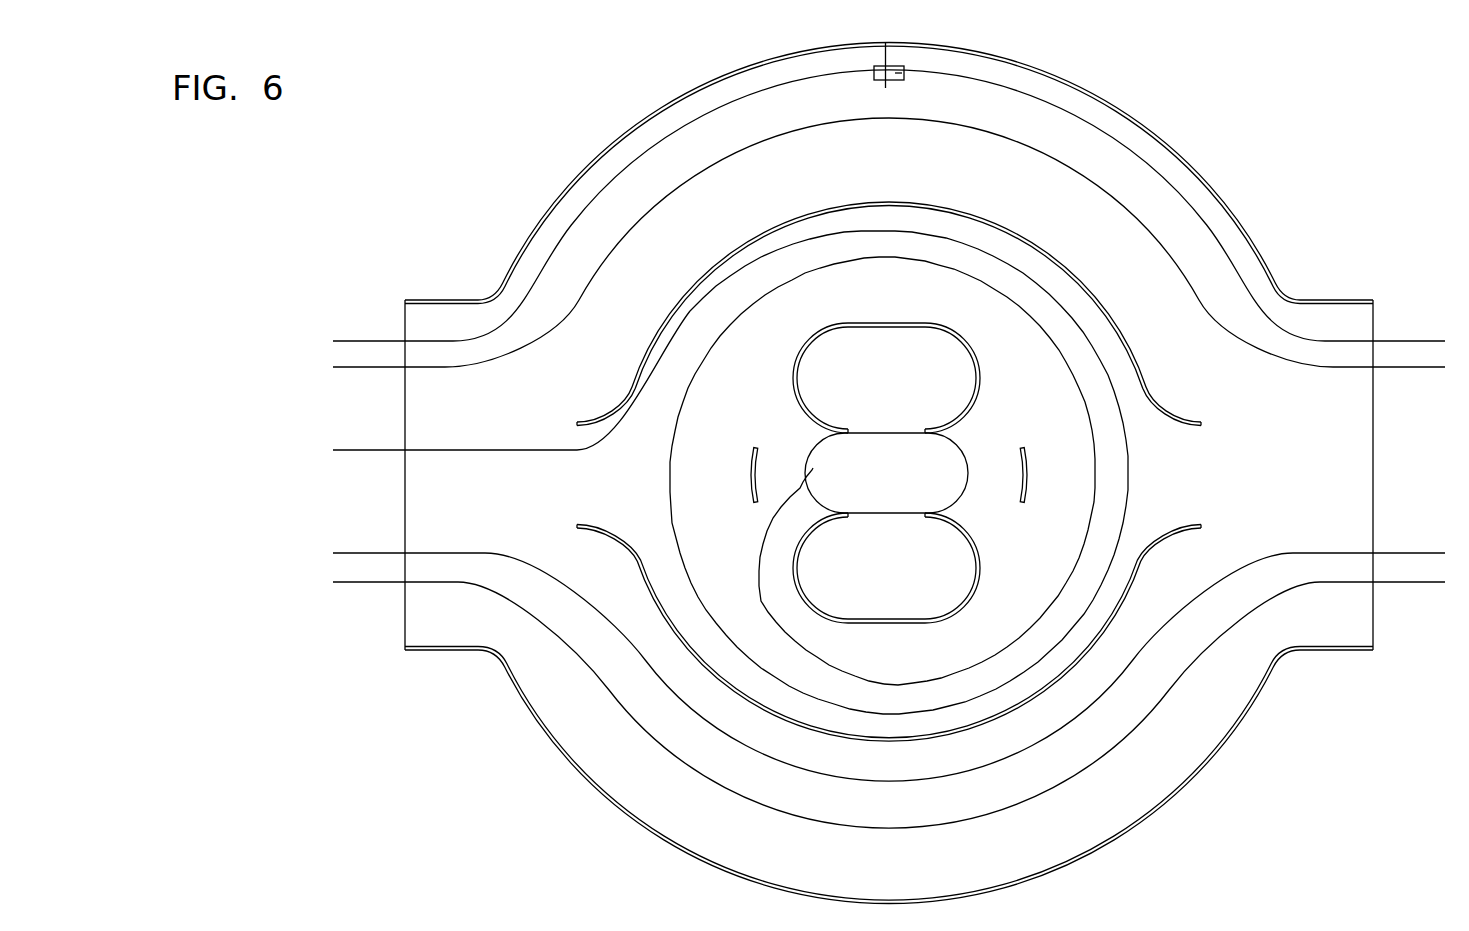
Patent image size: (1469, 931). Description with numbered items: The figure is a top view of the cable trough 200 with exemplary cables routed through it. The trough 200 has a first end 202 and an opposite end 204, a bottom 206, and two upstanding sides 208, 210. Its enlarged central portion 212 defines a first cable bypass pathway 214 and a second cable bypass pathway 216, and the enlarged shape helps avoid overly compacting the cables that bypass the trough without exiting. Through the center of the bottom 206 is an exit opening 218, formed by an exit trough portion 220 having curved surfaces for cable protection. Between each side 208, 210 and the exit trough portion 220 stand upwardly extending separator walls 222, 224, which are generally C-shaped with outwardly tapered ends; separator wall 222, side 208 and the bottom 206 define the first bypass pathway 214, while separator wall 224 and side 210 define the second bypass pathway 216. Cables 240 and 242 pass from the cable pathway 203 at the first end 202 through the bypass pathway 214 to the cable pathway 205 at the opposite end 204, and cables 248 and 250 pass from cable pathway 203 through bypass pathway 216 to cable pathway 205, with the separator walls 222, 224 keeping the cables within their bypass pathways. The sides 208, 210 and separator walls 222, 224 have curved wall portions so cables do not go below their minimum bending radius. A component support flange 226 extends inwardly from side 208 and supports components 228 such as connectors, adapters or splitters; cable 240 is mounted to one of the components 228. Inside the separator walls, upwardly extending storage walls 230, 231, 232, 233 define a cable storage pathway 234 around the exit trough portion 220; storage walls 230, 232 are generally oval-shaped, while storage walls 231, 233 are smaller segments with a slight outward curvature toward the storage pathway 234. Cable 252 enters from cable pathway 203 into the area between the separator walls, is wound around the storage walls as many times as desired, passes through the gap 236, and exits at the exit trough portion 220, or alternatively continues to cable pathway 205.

The trough 200 is at (510, 792).
The first end 202 is at (405, 497).
The cable pathway 203 is at (478, 518).
The opposite end 204 is at (1373, 488).
The cable pathway 205 is at (1348, 432).
The bottom 206 is at (1271, 490).
The side 208 is at (1113, 106).
The side 210 is at (1205, 767).
The enlarged central portion 212 is at (1123, 833).
The first cable bypass pathway 214 is at (858, 180).
The second cable bypass pathway 216 is at (920, 884).
The exit opening 218 is at (909, 493).
The exit trough portion 220 is at (962, 445).
The separator wall 222 is at (913, 204).
The separator wall 224 is at (888, 743).
The component support flange 226 is at (883, 55).
The components 228 is at (903, 66).
The storage wall 230 is at (868, 325).
The storage wall 231 is at (1030, 470).
The storage wall 232 is at (882, 623).
The storage wall 233 is at (745, 470).
The cable storage pathway 234 is at (765, 408).
The gap 236 is at (763, 510).
The cable 240 is at (597, 200).
The cable 242 is at (597, 275).
The cable 248 is at (652, 673).
The cable 250 is at (703, 775).
The cable 252 is at (522, 452).